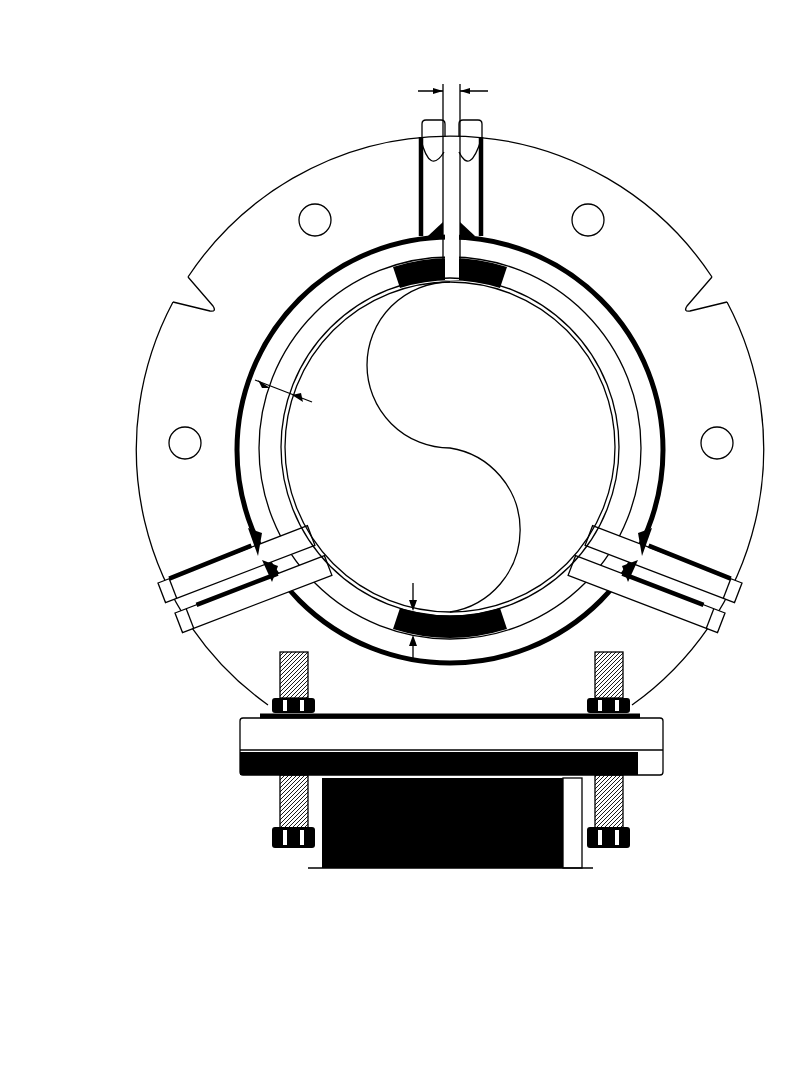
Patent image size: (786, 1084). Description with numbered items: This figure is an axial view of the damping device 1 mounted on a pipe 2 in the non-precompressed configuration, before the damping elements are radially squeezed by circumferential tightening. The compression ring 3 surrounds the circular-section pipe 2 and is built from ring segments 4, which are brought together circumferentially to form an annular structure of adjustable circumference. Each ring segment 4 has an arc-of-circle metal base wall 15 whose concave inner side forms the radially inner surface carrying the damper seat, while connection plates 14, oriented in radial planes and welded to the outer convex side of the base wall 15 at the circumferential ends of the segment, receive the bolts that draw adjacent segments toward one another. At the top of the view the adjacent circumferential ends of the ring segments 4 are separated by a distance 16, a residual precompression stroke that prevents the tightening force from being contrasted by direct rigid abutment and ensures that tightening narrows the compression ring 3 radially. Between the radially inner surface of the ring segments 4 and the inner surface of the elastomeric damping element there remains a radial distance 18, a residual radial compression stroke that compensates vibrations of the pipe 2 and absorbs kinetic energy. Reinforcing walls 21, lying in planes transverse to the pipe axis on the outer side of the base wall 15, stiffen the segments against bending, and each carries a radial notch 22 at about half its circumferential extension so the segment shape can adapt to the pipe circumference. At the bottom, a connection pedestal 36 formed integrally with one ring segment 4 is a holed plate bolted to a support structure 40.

The damping device 1 is at (666, 173).
The pipe 2 is at (295, 476).
The compression ring 3 is at (249, 182).
The ring segment 4 is at (312, 330).
The connection plate 14 is at (419, 140).
The base wall 15 is at (542, 270).
The distance 16 is at (458, 83).
The radial distance 18 is at (317, 397).
The reinforcing wall 21 is at (722, 357).
The radial notch 22 is at (190, 298).
The connection pedestal 36 is at (650, 735).
The support structure 40 is at (652, 762).